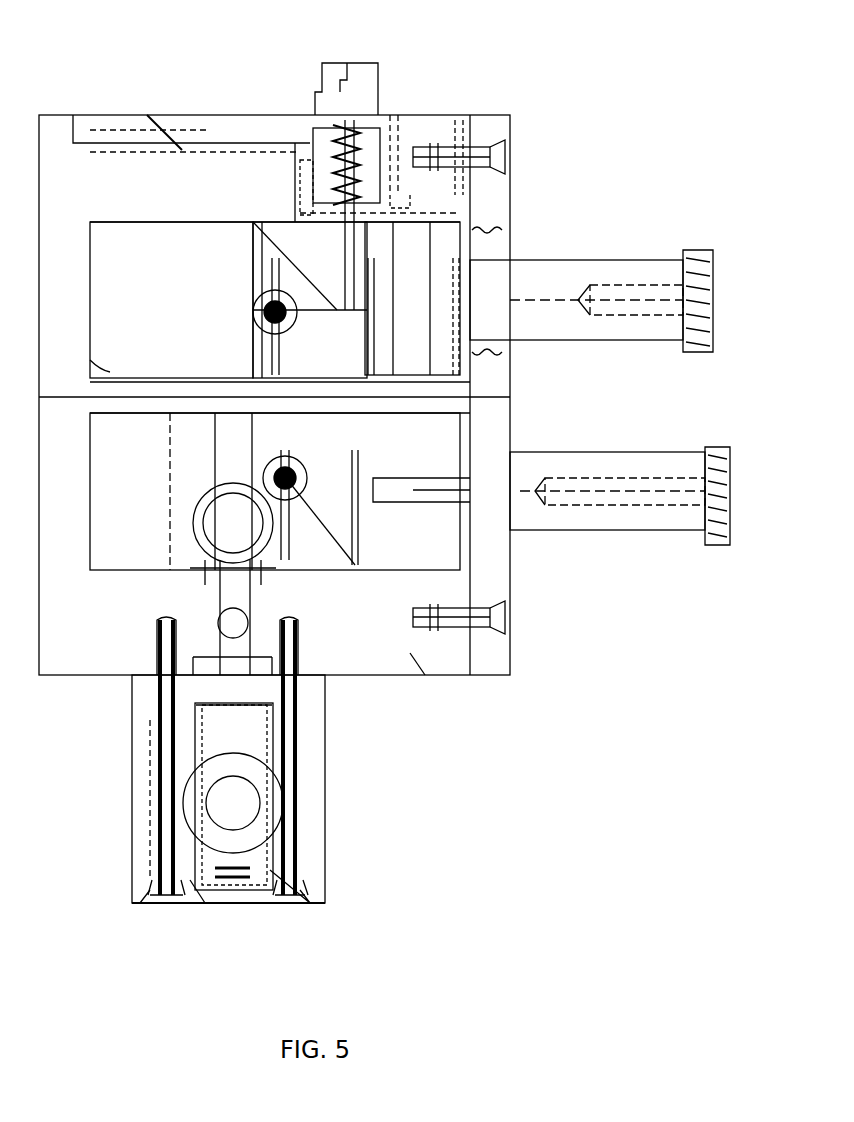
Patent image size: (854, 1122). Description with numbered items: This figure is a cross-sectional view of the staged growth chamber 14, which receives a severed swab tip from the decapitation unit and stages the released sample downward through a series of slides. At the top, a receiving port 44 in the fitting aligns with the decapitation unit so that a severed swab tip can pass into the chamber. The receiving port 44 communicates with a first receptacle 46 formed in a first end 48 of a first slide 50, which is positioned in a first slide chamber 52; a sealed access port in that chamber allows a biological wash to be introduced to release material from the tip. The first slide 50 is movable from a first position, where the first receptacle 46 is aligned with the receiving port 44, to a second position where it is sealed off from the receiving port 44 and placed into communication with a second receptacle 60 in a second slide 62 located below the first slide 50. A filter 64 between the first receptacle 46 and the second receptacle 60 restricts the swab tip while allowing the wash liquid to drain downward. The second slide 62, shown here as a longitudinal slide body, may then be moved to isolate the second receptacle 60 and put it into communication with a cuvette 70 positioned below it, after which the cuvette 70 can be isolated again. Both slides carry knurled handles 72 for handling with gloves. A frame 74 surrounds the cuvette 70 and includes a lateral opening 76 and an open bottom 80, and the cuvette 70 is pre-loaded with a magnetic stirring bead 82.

The staged growth chamber 14 is at (172, 58).
The receiving port 44 is at (407, 106).
The first receptacle 46 is at (425, 330).
The first end 48 is at (476, 236).
The first slide 50 is at (250, 272).
The first slide chamber 52 is at (106, 312).
The second receptacle 60 is at (245, 434).
The second slide 62 is at (440, 541).
The filter 64 is at (174, 432).
The cuvette 70 is at (238, 726).
The knurled handles 72 is at (716, 444).
The frame 74 is at (325, 808).
The lateral opening 76 is at (214, 799).
The open bottom 80 is at (225, 918).
The magnetic stirring bead 82 is at (254, 884).